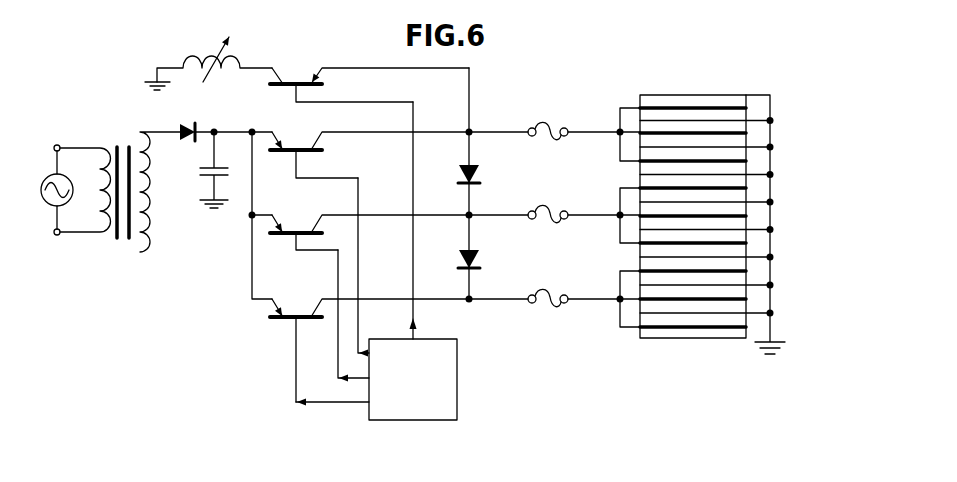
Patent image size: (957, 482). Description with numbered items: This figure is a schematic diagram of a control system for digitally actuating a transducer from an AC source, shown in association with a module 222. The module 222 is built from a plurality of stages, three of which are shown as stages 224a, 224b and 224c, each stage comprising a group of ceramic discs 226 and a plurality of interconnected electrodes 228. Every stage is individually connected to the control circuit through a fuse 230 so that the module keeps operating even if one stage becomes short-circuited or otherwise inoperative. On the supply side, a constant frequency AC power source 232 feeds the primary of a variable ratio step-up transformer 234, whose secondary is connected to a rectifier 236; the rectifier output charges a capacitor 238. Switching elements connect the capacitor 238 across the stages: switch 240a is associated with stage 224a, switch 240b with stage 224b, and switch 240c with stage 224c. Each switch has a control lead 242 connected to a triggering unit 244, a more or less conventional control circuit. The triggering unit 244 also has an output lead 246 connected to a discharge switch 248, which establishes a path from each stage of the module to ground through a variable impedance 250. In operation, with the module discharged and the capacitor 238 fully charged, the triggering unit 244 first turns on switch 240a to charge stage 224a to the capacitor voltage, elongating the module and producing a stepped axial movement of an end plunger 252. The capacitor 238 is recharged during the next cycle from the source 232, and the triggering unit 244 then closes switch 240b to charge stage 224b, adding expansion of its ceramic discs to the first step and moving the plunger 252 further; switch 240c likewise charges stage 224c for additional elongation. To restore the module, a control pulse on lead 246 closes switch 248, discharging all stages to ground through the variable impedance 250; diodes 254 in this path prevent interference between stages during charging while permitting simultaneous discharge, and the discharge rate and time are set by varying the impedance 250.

The module 222 is at (770, 88).
The stage 224a is at (640, 100).
The stage 224b is at (640, 183).
The stage 224c is at (640, 266).
The ceramic discs 226 is at (720, 322).
The interconnected electrodes 228 is at (650, 325).
The fuse 230 is at (548, 167).
The constant frequency AC power source 232 is at (55, 213).
The variable ratio step-up transformer 234 is at (118, 243).
The rectifier 236 is at (180, 127).
The capacitor 238 is at (202, 172).
The switch 240a is at (303, 143).
The switch 240b is at (312, 226).
The switch 240c is at (312, 310).
The control lead 242 is at (325, 403).
The triggering unit 244 is at (457, 420).
The output lead 246 is at (418, 325).
The discharge switch 248 is at (284, 79).
The variable impedance 250 is at (236, 57).
The end plunger 252 is at (668, 339).
The diodes 254 is at (478, 262).